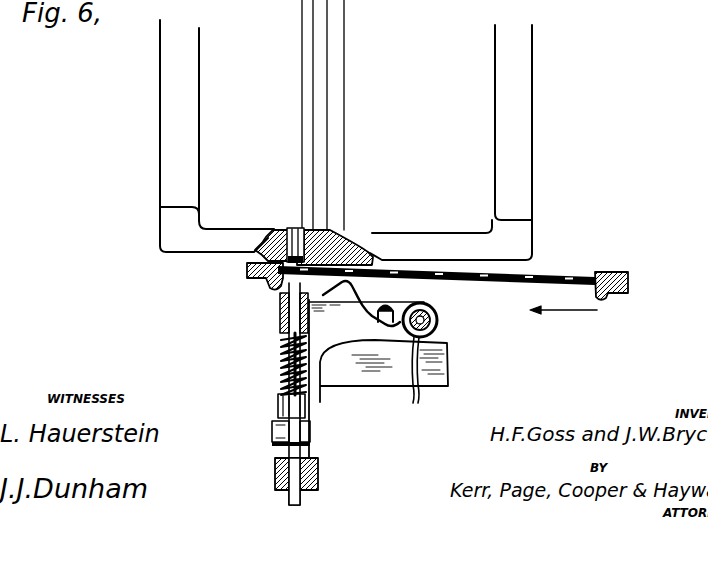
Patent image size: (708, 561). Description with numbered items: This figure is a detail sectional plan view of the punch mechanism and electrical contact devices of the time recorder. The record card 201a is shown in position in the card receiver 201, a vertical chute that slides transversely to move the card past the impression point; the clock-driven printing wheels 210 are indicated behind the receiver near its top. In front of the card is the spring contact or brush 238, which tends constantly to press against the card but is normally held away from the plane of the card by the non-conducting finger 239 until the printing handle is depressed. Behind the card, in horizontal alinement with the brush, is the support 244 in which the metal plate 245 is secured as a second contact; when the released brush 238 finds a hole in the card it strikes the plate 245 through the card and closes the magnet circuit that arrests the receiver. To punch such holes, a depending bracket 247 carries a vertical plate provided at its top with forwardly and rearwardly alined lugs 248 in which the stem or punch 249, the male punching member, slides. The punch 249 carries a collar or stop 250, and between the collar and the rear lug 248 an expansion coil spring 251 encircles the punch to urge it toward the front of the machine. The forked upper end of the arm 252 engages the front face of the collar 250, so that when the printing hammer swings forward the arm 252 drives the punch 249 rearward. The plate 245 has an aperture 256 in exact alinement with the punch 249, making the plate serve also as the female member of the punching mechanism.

The printing wheels 210 is at (345, 156).
The support 244 is at (222, 229).
The metal plate 245 is at (369, 252).
The aperture 256 is at (287, 231).
The card 201a is at (582, 264).
The card receiver 201 is at (253, 285).
The spring contact 238 is at (349, 284).
The non-conducting finger 239 is at (397, 305).
The depending bracket 247 is at (325, 353).
The lugs 248 is at (280, 323).
The collar 250 is at (252, 394).
The expansion coil spring 251 is at (283, 365).
The arm 252 is at (278, 407).
The punch 249 is at (280, 472).